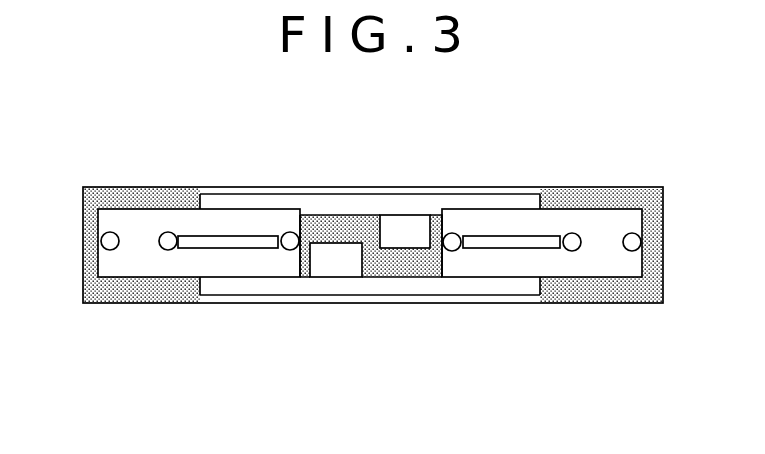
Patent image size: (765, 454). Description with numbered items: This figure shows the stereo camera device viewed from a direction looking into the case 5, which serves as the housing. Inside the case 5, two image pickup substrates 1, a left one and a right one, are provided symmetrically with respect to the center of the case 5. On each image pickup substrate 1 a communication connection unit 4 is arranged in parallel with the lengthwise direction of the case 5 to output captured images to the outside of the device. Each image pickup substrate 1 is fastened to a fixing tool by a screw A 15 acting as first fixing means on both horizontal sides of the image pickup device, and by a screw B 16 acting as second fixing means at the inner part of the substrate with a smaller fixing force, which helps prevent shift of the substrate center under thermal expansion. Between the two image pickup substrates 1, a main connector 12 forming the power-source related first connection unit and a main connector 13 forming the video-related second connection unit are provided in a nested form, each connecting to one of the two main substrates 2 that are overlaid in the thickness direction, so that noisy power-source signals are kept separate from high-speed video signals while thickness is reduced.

The image pickup substrate 1 is at (379, 292).
The main substrate 2 is at (373, 253).
The communication connection unit 4 is at (417, 254).
The case 5 is at (394, 206).
The main connector 12 is at (389, 323).
The main connector 13 is at (458, 181).
The screw A 15 is at (375, 264).
The screw B 16 is at (372, 291).